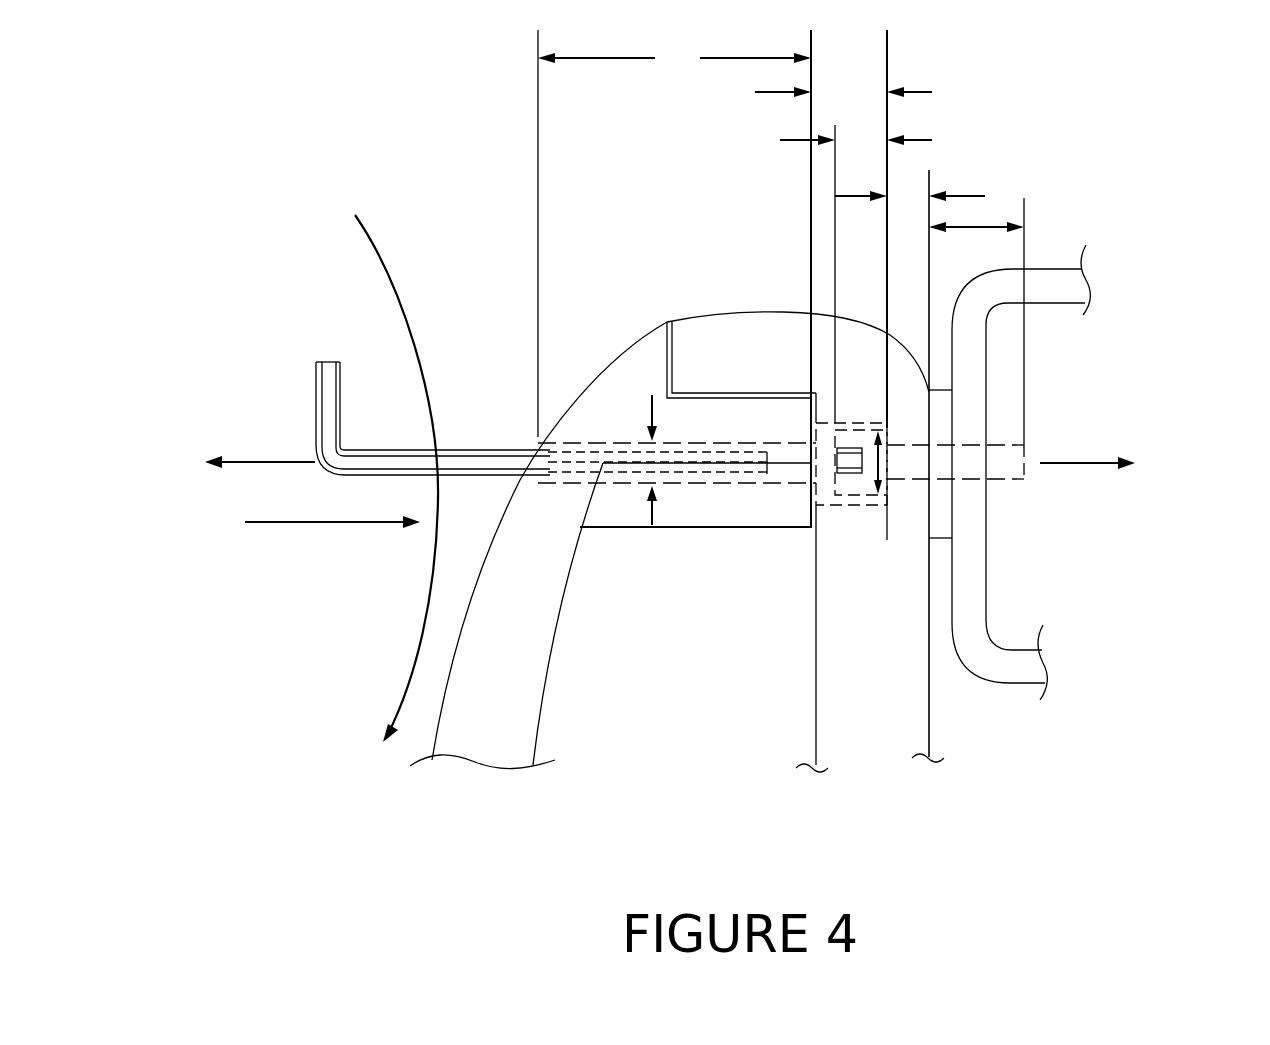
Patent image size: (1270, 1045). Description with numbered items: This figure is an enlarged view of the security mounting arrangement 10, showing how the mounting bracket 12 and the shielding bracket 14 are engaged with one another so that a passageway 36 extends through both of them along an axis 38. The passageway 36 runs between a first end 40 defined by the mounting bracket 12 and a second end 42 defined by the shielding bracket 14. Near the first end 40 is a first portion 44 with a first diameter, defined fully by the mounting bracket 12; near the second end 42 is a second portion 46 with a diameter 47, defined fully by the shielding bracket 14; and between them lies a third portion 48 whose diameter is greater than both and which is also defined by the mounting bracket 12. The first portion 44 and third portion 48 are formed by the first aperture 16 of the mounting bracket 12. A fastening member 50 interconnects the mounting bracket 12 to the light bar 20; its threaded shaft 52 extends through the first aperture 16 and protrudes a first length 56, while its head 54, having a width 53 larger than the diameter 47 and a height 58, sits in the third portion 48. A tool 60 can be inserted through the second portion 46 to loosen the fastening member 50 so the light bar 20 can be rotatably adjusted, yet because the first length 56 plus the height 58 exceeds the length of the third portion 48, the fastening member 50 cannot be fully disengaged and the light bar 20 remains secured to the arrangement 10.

The security mounting arrangement 10 is at (1100, 106).
The mounting bracket 12 is at (851, 697).
The shielding bracket 14 is at (486, 697).
The first aperture 16 is at (837, 429).
The light bar 20 is at (996, 524).
The passageway 36 is at (515, 438).
The axis 38 is at (278, 455).
The first end 40 is at (929, 418).
The second end 42 is at (522, 484).
The first portion 44 is at (910, 196).
The second portion 46 is at (674, 233).
The diameter of the second portion 47 is at (672, 535).
The third portion 48 is at (843, 92).
The fastening member 50 is at (1075, 483).
The shaft 52 is at (1023, 452).
The width of the head 53 is at (882, 465).
The head 54 is at (848, 487).
The first length 56 is at (975, 229).
The height 58 is at (856, 274).
The tool 60 is at (322, 358).